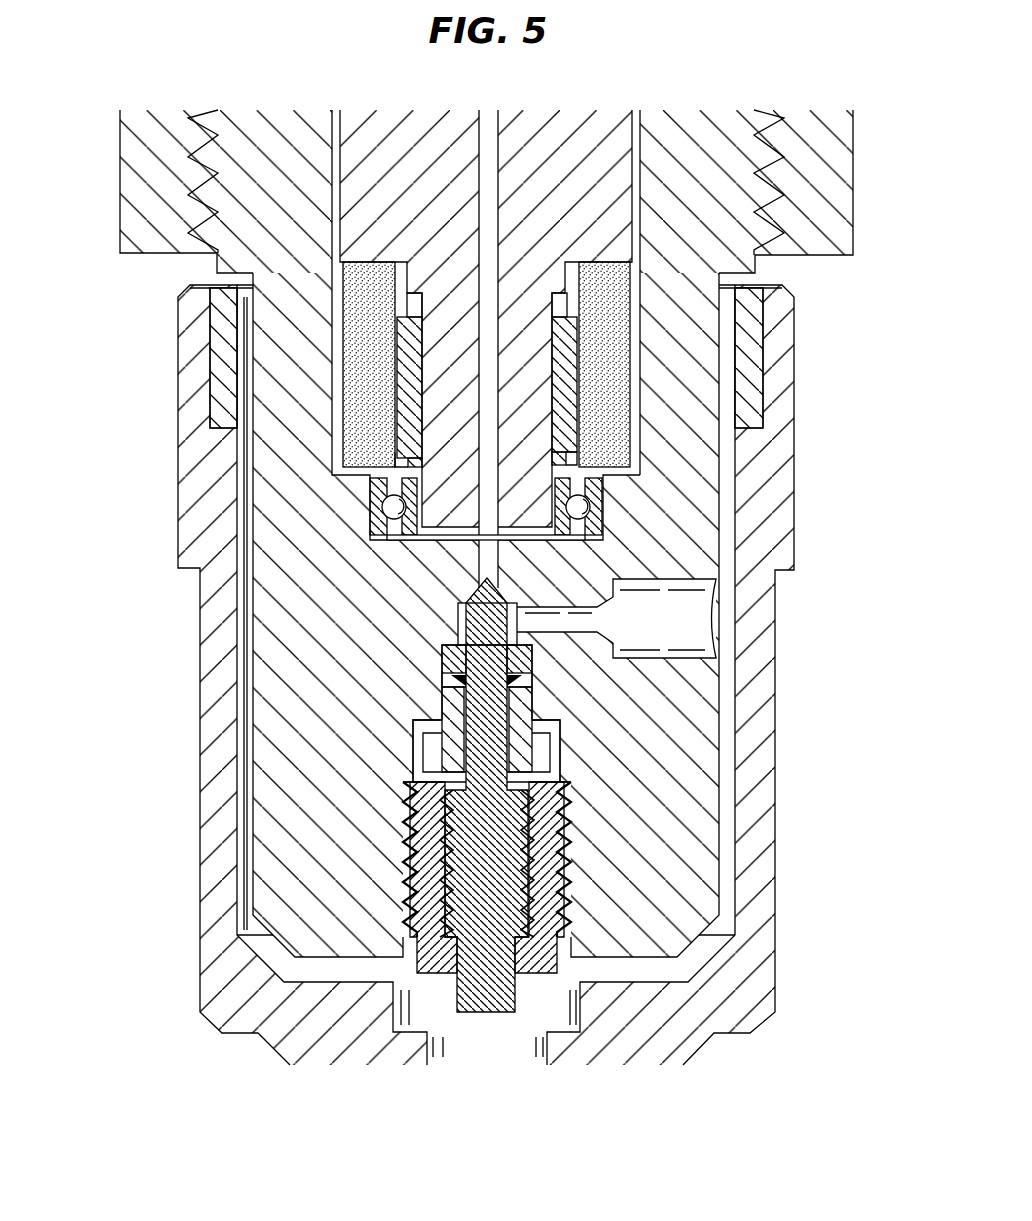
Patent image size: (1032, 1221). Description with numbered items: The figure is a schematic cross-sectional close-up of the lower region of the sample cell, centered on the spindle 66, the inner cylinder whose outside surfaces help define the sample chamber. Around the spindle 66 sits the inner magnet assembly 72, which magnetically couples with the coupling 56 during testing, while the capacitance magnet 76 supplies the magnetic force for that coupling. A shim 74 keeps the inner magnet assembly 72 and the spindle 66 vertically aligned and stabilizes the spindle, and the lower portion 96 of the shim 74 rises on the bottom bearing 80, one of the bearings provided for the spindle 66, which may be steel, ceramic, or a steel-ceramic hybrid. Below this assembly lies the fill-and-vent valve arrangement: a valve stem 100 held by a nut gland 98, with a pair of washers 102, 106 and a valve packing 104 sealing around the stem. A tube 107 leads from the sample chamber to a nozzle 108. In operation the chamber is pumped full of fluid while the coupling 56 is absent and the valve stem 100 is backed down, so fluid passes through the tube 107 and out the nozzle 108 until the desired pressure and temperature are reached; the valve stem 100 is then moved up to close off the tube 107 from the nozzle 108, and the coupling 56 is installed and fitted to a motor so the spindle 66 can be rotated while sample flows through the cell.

The coupling 56 is at (775, 702).
The spindle 66 is at (391, 191).
The inner magnet assembly 72 is at (613, 349).
The shim 74 is at (563, 392).
The capacitance magnet 76 is at (316, 879).
The bottom bearing 80 is at (387, 505).
The lower portion of shim 96 is at (563, 437).
The nut gland 98 is at (565, 818).
The valve stem 100 is at (520, 866).
The washer 102 is at (447, 753).
The valve packing 104 is at (447, 680).
The washer 106 is at (440, 650).
The tube 107 is at (473, 355).
The nozzle 108 is at (616, 618).